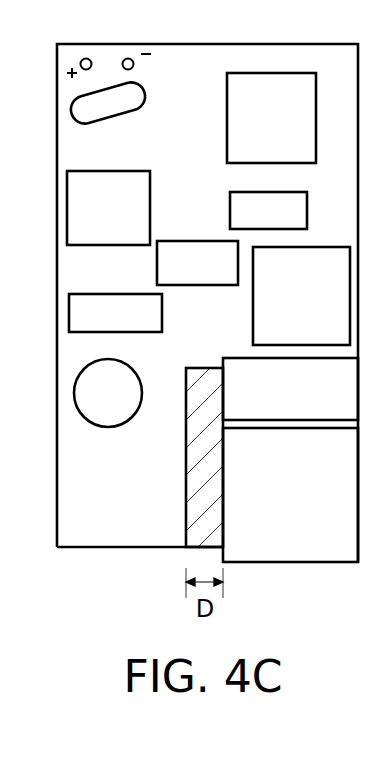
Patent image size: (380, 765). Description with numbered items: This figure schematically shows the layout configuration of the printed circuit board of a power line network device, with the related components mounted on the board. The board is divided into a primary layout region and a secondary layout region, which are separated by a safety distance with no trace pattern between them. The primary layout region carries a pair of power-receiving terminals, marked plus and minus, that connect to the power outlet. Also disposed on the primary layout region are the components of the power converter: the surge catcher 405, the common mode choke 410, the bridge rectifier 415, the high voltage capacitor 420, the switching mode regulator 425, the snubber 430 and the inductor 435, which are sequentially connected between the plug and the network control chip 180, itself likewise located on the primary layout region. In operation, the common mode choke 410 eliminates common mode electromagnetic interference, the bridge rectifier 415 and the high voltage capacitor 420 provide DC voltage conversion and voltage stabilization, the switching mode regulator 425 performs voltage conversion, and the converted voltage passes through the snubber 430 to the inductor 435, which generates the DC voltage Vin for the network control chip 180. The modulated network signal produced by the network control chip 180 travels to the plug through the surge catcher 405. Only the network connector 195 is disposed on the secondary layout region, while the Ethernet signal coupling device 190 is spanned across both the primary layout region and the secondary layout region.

The surge catcher 405 is at (88, 115).
The common mode choke 410 is at (86, 232).
The bridge rectifier 415 is at (88, 326).
The high voltage capacitor 420 is at (85, 406).
The switching mode regulator 425 is at (249, 156).
The snubber 430 is at (247, 223).
The inductor 435 is at (177, 283).
The network control chip 180 is at (280, 338).
The Ethernet signal coupling device 190 is at (287, 413).
The network connector 195 is at (302, 550).